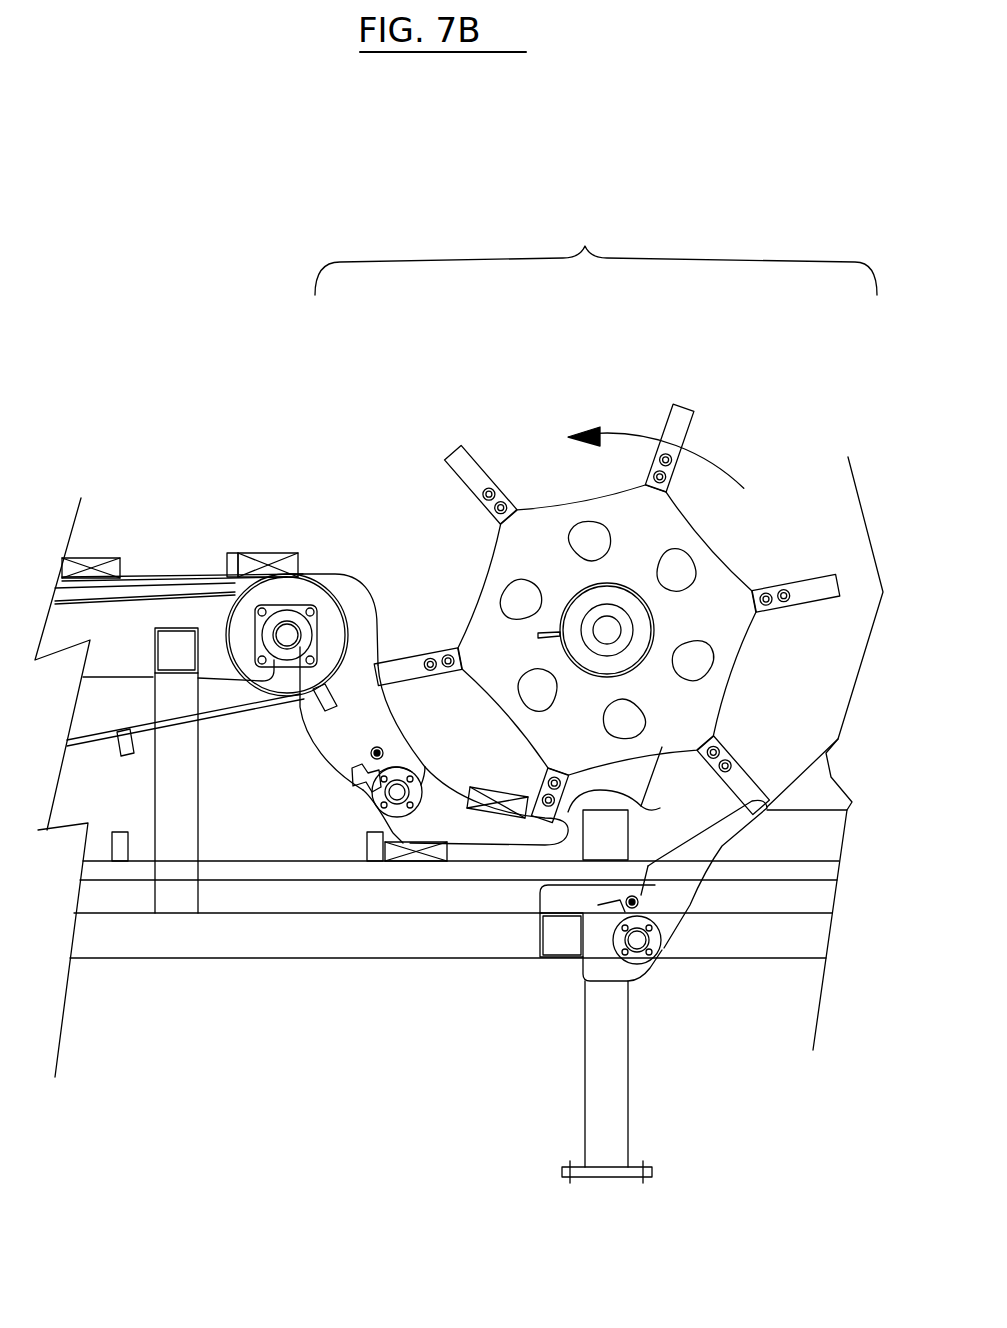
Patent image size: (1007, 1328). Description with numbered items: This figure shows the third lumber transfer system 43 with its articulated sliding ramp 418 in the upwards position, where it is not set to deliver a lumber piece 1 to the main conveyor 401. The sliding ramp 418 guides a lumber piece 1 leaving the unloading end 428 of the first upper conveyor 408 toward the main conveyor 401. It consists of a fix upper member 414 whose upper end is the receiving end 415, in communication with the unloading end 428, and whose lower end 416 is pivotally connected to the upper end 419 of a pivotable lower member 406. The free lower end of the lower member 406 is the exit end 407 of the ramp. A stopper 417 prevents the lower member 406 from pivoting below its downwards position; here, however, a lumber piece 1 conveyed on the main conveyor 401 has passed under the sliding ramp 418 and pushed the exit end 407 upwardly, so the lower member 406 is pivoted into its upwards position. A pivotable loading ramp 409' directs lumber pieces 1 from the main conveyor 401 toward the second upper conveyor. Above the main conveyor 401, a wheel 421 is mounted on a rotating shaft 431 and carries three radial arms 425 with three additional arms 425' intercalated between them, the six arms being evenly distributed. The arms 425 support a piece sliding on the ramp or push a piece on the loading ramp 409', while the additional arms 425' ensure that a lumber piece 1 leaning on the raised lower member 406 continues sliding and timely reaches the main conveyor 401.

The third lumber transfer system 43 is at (585, 244).
The lumber piece 1 is at (403, 843).
The main conveyor 401 is at (120, 851).
The pivotable lower member 406 is at (457, 830).
The exit end 407 is at (683, 808).
The first upper conveyor 408 is at (203, 613).
The pivotable loading ramp 409' is at (653, 920).
The fix upper member 414 is at (365, 707).
The receiving end 415 is at (361, 575).
The lower end 416 is at (406, 733).
The stopper 417 is at (370, 754).
The sliding ramp 418 is at (351, 814).
The upper end 419 is at (485, 760).
The wheel 421 is at (728, 617).
The arms 425 is at (640, 701).
The additional arms 425' is at (588, 589).
The unloading end 428 is at (318, 570).
The rotating shaft 431 is at (607, 630).